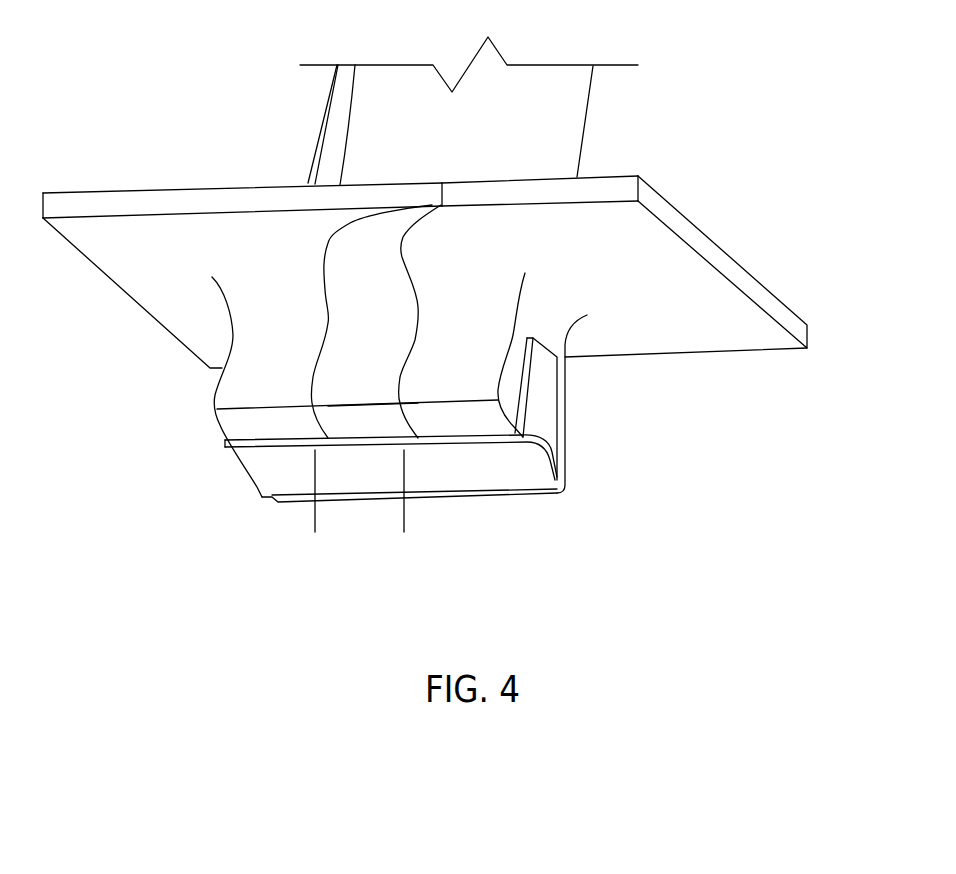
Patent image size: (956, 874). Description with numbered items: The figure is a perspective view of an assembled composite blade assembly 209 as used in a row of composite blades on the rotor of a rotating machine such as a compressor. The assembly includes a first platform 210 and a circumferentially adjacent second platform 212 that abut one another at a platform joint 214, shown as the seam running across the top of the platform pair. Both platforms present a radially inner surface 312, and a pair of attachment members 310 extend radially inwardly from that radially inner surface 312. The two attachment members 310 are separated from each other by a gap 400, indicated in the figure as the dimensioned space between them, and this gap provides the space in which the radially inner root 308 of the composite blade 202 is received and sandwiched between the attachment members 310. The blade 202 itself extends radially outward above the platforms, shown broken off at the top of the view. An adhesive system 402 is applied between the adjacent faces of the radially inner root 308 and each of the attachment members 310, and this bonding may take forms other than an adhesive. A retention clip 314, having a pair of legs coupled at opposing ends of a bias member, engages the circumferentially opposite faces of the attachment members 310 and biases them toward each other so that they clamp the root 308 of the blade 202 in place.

The composite blade 202 is at (530, 88).
The composite blade assembly 209 is at (765, 155).
The first platform 210 is at (205, 200).
The second platform 212 is at (613, 188).
The platform joint 214 is at (442, 193).
The radially inner root 308 is at (388, 364).
The attachment member 310 is at (235, 395).
The radially inner surface 312 is at (175, 268).
The retention clip 314 is at (540, 425).
The gap 400 is at (404, 525).
The adhesive system 402 is at (323, 277).